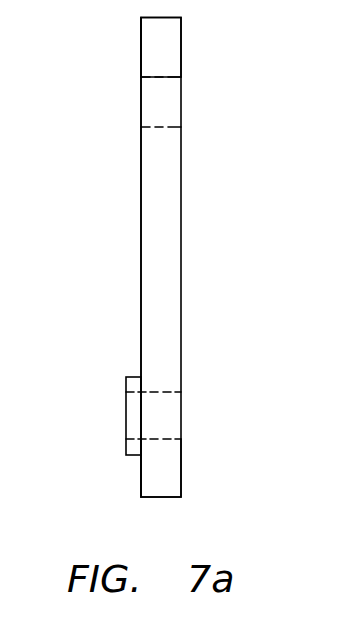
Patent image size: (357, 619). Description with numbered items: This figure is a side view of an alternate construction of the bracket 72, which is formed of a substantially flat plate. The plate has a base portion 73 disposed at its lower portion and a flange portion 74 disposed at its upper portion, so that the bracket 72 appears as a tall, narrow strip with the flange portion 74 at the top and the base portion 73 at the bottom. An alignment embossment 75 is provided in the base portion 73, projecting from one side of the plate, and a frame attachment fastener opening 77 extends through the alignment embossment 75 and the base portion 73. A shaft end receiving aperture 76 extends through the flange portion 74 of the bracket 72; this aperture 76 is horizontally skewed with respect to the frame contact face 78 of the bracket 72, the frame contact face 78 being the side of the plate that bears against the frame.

The bracket 72 is at (181, 323).
The base portion 73 is at (152, 468).
The flange portion 74 is at (181, 44).
The alignment embossment 75 is at (126, 430).
The shaft end receiving aperture 76 is at (168, 127).
The frame attachment fastener opening 77 is at (170, 438).
The frame contact face 78 is at (141, 323).